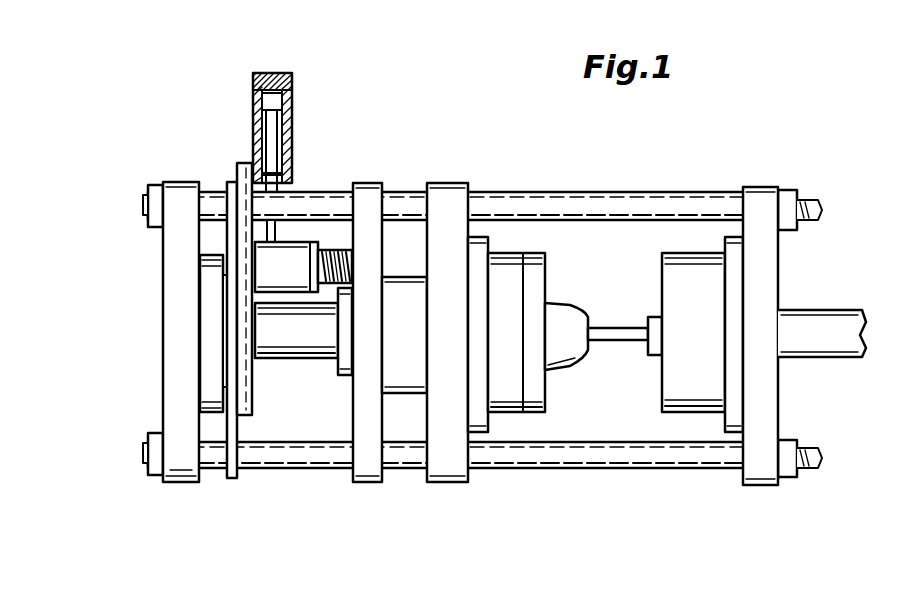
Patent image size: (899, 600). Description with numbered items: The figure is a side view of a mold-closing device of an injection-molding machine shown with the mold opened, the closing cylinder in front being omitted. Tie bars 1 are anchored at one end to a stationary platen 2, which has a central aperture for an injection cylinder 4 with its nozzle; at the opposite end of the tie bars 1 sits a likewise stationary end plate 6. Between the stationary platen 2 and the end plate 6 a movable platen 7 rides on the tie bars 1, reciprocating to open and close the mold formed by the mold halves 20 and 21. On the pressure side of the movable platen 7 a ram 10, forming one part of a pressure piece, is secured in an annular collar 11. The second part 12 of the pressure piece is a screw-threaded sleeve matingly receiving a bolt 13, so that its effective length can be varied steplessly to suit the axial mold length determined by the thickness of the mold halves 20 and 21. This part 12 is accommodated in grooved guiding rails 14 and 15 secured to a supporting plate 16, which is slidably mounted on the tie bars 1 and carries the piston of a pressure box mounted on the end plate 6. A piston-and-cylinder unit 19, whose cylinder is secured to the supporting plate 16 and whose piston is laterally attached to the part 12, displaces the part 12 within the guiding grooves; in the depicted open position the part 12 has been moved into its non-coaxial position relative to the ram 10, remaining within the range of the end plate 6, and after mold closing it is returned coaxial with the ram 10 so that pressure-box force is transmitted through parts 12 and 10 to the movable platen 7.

The tie bars 1 is at (587, 208).
The stationary platen 2 is at (762, 205).
The injection cylinder 4 is at (825, 330).
The end plate 6 is at (175, 205).
The movable platen 7 is at (372, 217).
The ram 10 is at (312, 347).
The annular collar 11 is at (348, 360).
The second part of the pressure piece 12 is at (280, 247).
The bolt 13 is at (330, 253).
The grooved guiding rail 14 is at (245, 298).
The grooved guiding rail 15 is at (232, 330).
The supporting plate 16 is at (233, 192).
The piston-and-cylinder unit 19 is at (287, 108).
The mold half 20 is at (515, 268).
The mold half 21 is at (688, 280).